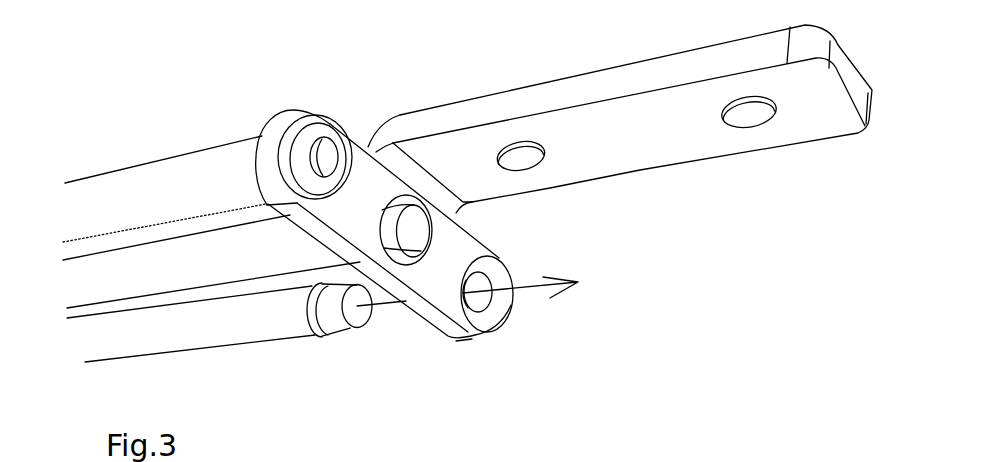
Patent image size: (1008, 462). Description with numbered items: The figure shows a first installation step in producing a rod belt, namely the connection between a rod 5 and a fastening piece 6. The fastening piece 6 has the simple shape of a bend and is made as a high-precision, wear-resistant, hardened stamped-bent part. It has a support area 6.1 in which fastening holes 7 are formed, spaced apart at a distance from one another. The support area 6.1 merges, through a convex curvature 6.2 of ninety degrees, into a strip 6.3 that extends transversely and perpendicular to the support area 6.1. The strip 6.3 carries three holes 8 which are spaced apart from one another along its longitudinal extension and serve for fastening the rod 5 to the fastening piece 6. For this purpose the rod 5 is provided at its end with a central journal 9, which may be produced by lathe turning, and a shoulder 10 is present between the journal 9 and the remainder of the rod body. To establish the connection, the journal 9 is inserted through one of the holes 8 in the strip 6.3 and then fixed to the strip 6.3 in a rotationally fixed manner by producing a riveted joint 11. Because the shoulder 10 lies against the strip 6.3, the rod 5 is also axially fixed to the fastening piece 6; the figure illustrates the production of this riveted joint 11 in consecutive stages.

The rod 5 is at (218, 167).
The fastening piece 6 is at (569, 197).
The support area 6.1 is at (560, 122).
The convex curvature 6.2 is at (378, 129).
The strip 6.3 is at (440, 280).
The fastening holes 7 is at (534, 163).
The holes 8 is at (483, 302).
The journal 9 is at (410, 240).
The shoulder 10 is at (320, 330).
The riveted joint 11 is at (318, 132).